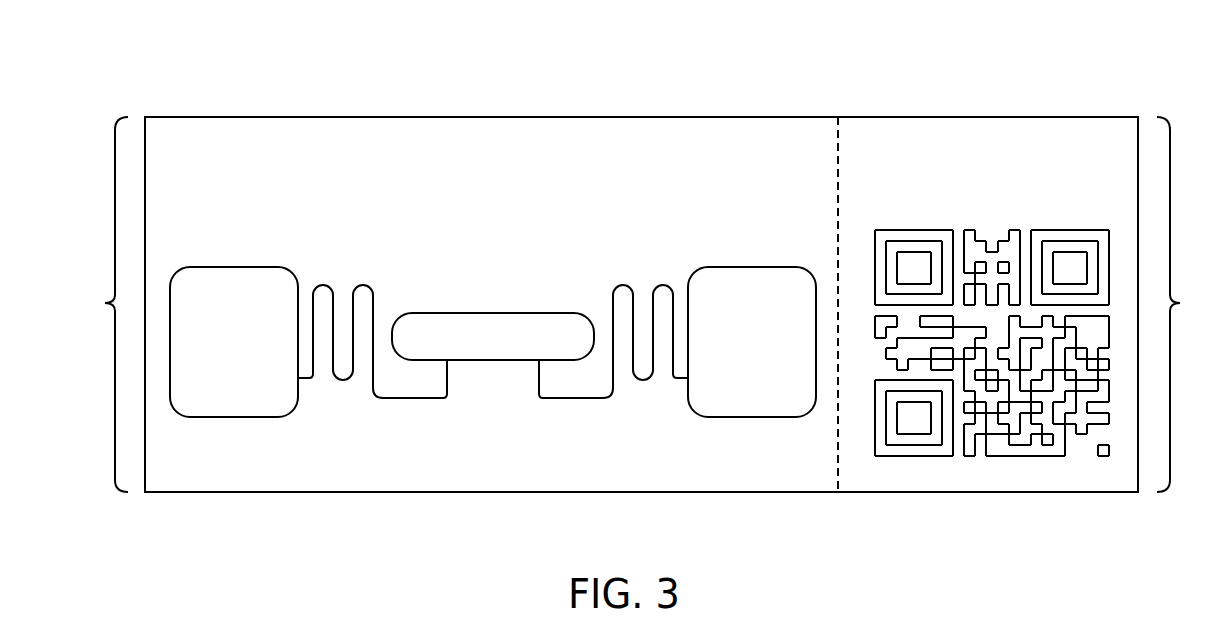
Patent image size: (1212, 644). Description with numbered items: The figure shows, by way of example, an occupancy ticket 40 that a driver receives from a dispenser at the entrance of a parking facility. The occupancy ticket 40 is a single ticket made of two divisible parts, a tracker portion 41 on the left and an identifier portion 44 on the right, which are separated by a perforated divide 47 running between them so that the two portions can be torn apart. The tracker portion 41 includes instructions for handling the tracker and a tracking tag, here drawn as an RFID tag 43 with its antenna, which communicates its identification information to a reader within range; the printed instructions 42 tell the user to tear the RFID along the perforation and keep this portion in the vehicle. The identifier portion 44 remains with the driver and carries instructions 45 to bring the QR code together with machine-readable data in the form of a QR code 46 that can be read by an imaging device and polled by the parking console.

The occupancy ticket 40 is at (760, 80).
The tracker portion 41 is at (102, 304).
The instruction text 42 is at (545, 117).
The RFID antenna 43 is at (250, 462).
The identifier portion 44 is at (1183, 304).
The QR code text 45 is at (938, 117).
The QR code 46 is at (993, 475).
The perforated divide 47 is at (838, 117).